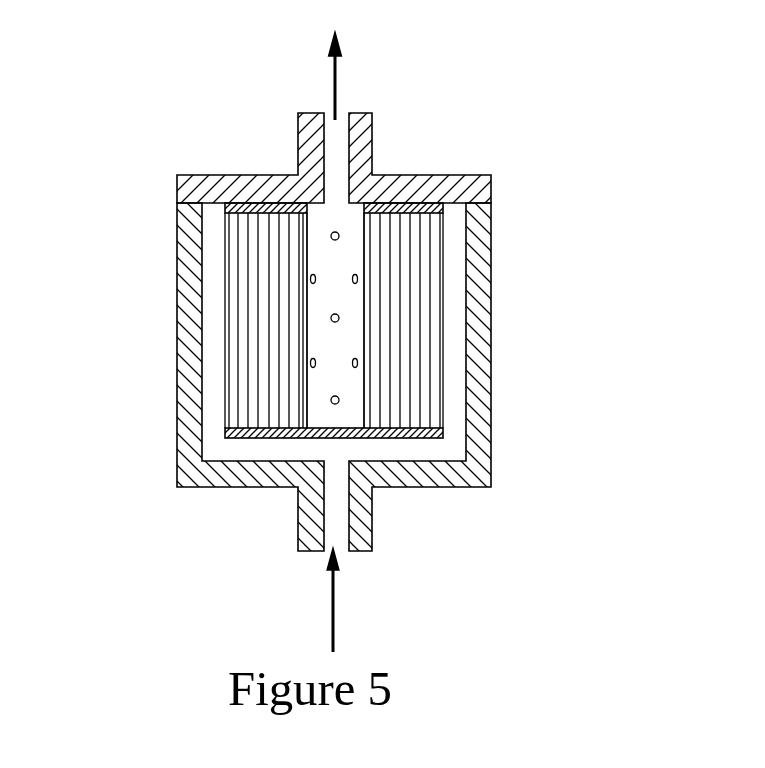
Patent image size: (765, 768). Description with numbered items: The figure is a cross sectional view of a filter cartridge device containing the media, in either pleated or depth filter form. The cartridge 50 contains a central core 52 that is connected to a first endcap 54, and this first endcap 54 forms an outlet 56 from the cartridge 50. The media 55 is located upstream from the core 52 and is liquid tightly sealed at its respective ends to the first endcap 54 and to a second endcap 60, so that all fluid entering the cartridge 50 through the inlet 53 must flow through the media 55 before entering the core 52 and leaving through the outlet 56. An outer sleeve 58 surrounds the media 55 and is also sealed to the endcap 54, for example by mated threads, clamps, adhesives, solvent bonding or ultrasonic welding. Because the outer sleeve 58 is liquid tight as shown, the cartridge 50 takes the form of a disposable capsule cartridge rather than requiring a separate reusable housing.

The cartridge 50 is at (349, 334).
The central core 52 is at (322, 343).
The inlet 53 is at (328, 537).
The first endcap 54 is at (413, 203).
The media 55 is at (422, 363).
The outlet 56 is at (340, 120).
The outer sleeve 58 is at (183, 272).
The second endcap 60 is at (421, 438).